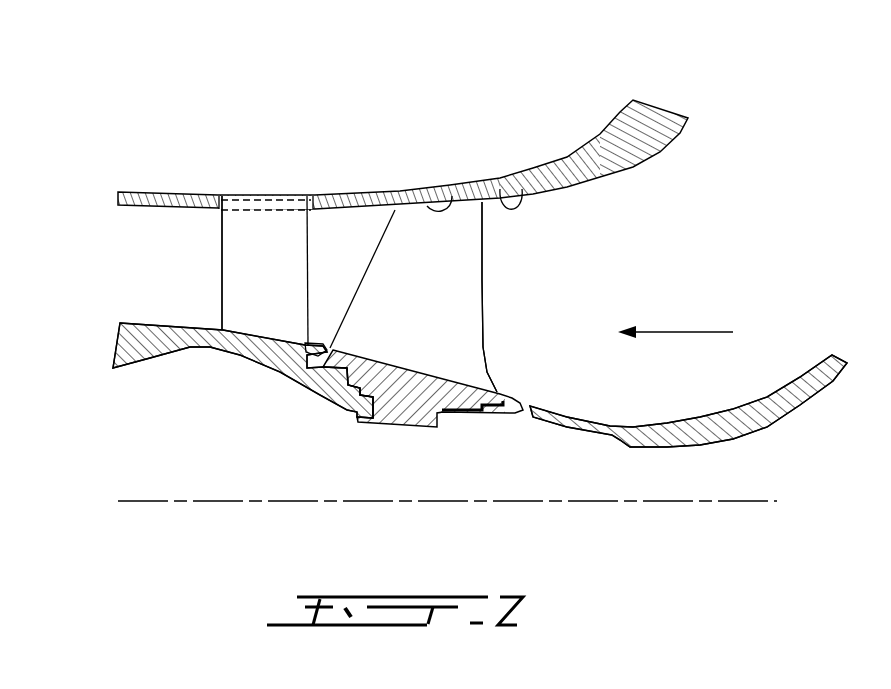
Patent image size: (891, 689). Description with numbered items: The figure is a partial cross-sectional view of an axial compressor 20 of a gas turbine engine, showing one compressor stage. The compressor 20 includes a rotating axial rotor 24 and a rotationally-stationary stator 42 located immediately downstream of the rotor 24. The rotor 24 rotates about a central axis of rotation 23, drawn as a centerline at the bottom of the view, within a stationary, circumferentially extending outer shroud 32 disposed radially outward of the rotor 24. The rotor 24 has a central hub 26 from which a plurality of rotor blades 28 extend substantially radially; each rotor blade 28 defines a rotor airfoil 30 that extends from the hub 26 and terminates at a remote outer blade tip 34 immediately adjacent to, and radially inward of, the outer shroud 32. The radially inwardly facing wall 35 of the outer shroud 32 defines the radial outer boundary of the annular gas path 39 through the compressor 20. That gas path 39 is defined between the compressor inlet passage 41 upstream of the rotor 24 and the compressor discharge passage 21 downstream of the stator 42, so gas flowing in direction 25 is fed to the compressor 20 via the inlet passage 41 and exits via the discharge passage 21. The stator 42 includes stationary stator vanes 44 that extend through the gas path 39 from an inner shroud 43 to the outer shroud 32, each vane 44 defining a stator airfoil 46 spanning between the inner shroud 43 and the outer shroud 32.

The axial compressor 20 is at (298, 176).
The compressor discharge passage 21 is at (130, 278).
The central axis of rotation 23 is at (271, 500).
The axial rotor 24 is at (506, 370).
The direction of gas flow 25 is at (678, 333).
The central hub 26 is at (410, 399).
The rotor blades 28 is at (468, 315).
The rotor airfoil 30 is at (443, 251).
The outer shroud 32 is at (374, 186).
The outer blade tip 34 is at (452, 196).
The radially inwardly facing wall 35 is at (519, 189).
The annular gas path 39 is at (324, 273).
The compressor inlet passage 41 is at (708, 305).
The stator 42 is at (226, 182).
The inner shroud 43 is at (197, 343).
The stator vanes 44 is at (243, 237).
The stator airfoil 46 is at (252, 281).